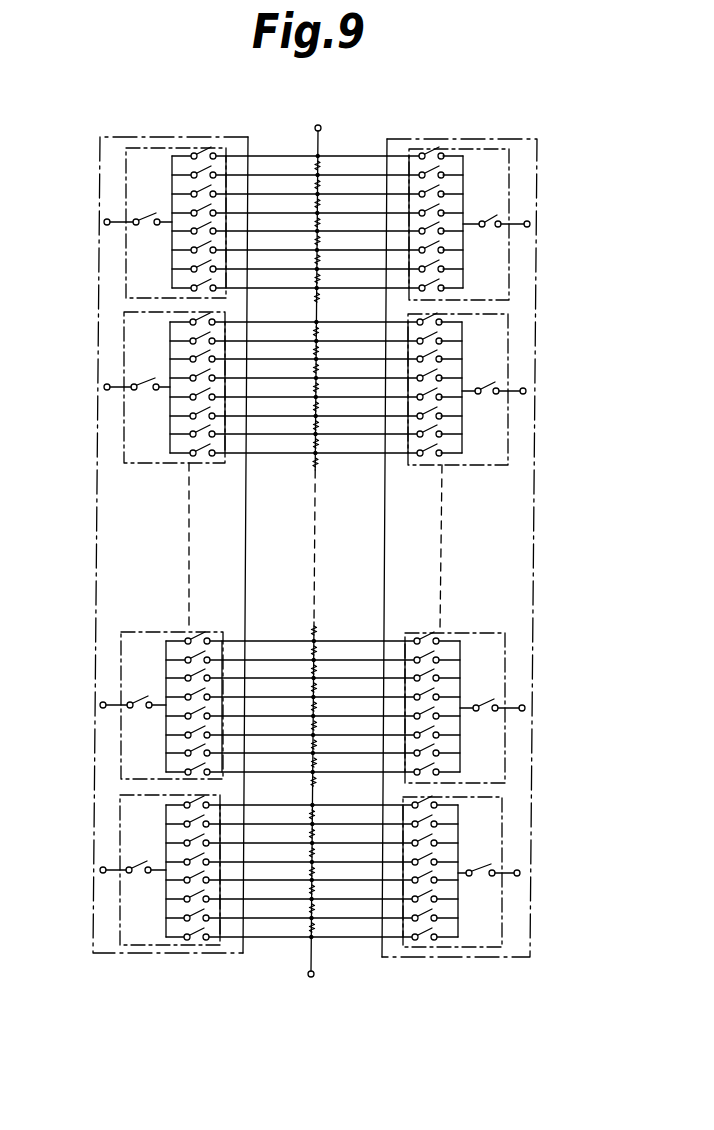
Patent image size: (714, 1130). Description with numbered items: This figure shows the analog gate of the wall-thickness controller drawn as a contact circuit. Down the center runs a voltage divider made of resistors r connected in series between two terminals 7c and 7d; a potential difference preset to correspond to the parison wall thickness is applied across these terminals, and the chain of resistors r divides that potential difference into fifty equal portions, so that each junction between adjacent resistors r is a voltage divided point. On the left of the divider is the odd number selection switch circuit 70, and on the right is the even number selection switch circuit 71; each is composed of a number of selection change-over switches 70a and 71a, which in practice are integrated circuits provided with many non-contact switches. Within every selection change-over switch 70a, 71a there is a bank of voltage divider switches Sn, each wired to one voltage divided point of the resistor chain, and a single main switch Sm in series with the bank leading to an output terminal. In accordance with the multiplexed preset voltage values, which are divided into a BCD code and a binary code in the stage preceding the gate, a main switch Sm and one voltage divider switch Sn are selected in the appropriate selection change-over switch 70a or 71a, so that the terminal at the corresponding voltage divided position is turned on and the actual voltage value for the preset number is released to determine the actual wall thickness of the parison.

The odd number selection switch circuit 70 is at (92, 601).
The selection switches 70a is at (135, 268).
The even number selection switch circuit 71 is at (560, 182).
The selection switches 71a is at (505, 283).
The main switch Sm is at (315, 531).
The voltage divider switch Sn is at (204, 150).
The resistors r is at (321, 551).
The terminal 7c is at (315, 114).
The terminal 7d is at (311, 988).